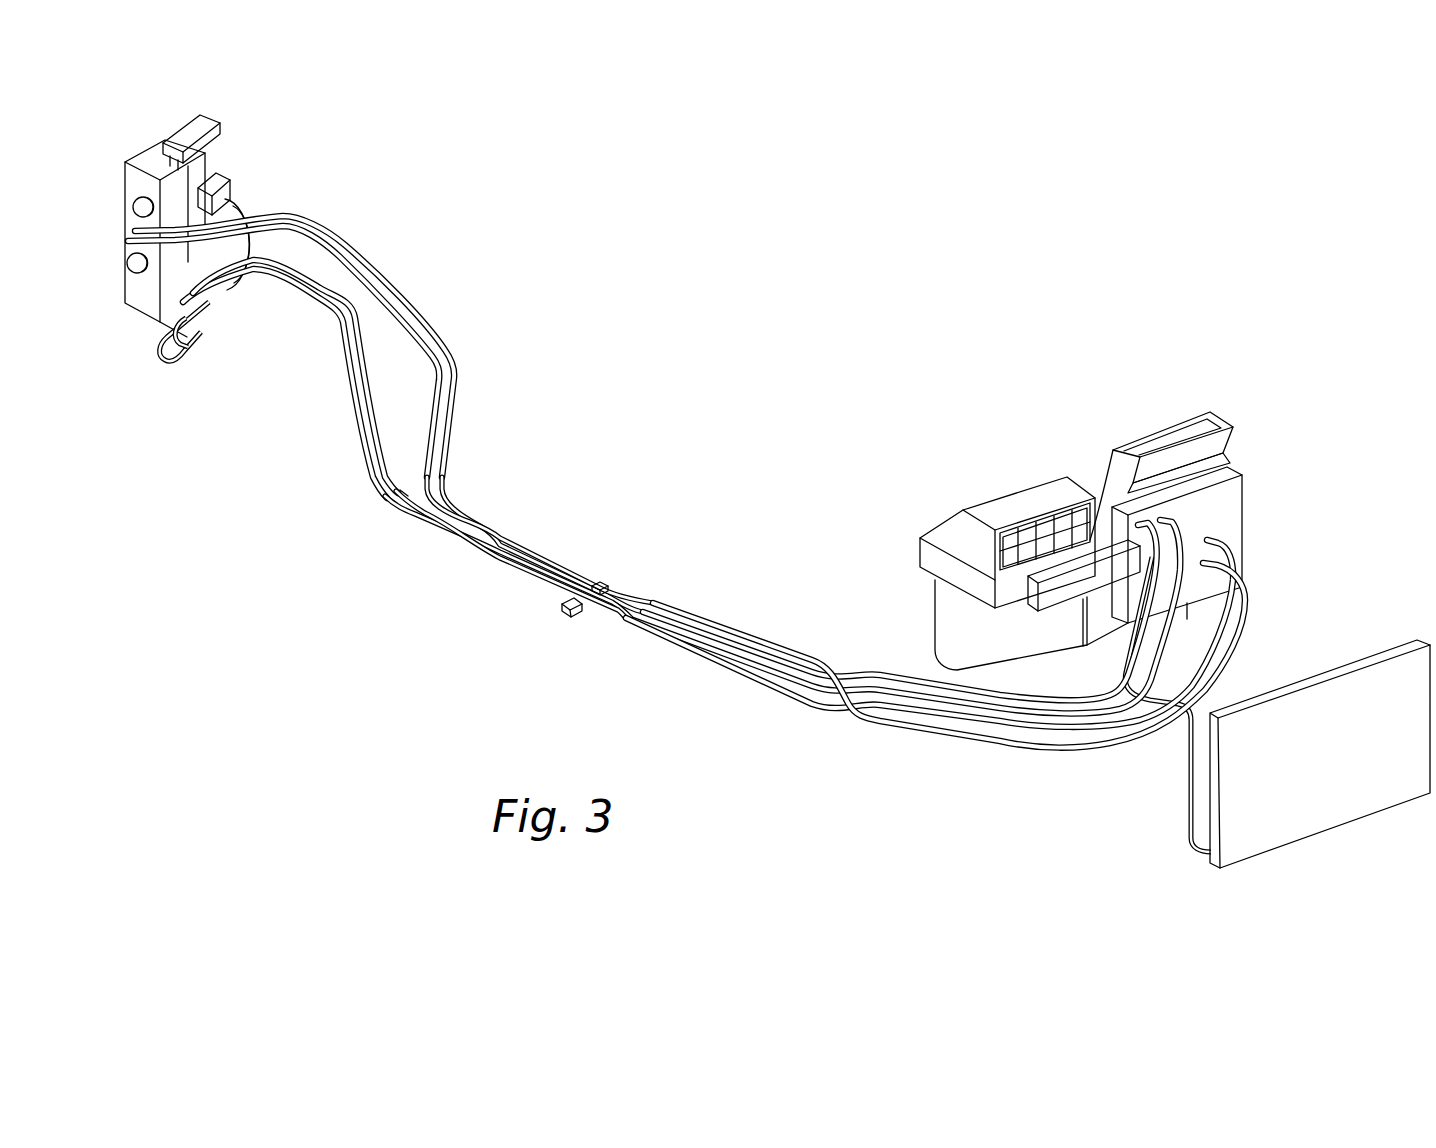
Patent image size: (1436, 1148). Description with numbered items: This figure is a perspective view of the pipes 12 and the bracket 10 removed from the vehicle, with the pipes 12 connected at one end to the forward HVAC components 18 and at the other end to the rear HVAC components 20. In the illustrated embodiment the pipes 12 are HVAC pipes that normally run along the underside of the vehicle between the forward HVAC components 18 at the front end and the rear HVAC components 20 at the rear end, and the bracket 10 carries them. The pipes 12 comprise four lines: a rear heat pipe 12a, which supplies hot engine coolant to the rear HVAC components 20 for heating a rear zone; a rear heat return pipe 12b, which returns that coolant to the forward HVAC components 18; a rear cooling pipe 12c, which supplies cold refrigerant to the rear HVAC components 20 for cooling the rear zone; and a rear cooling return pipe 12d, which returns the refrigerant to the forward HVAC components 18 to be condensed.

The bracket 10 is at (558, 632).
The pipes 12 is at (485, 563).
The rear heat pipe 12a is at (440, 327).
The rear heat return pipe 12b is at (342, 253).
The rear cooling pipe 12c is at (388, 490).
The rear cooling return pipe 12d is at (722, 670).
The forward HVAC components 18 is at (1435, 410).
The rear HVAC components 20 is at (255, 153).